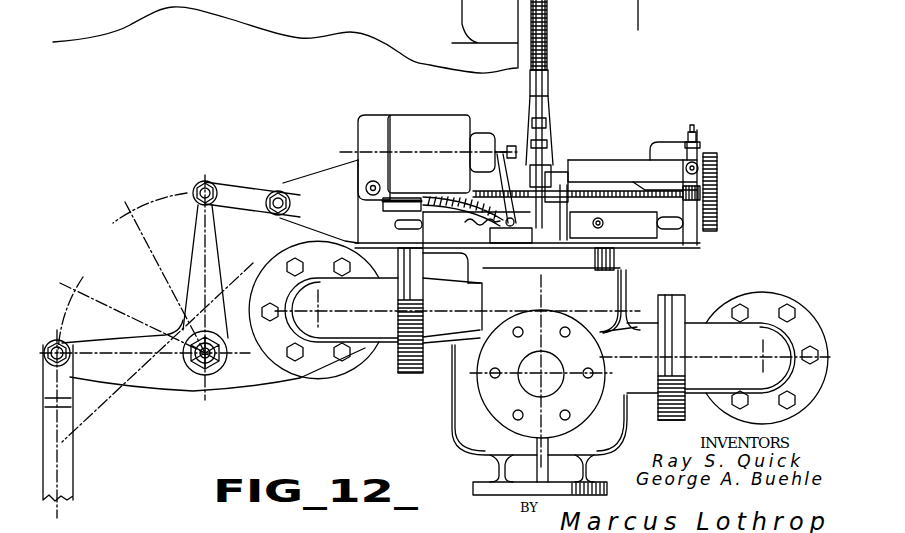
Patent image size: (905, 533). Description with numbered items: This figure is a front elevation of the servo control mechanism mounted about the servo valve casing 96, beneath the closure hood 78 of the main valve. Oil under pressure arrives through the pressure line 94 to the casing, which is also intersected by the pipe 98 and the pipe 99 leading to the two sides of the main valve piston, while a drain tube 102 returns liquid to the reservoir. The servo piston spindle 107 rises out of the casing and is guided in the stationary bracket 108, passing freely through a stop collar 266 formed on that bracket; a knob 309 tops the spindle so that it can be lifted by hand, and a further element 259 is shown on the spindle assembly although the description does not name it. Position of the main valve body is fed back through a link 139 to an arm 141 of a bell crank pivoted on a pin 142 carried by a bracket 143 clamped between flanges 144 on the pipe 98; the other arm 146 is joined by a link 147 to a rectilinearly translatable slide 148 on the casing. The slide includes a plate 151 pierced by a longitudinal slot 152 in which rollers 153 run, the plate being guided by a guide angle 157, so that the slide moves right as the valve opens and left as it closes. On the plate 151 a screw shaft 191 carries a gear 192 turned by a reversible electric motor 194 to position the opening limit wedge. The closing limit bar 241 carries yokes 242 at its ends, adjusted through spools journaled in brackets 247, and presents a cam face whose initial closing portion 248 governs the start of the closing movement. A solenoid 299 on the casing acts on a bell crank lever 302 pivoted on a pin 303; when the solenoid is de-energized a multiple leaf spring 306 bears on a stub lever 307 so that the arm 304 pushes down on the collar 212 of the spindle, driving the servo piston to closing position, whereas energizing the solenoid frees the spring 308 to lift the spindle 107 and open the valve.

The closure hood 78 is at (188, 0).
The pressure line 94 is at (523, 388).
The servo valve casing 96 is at (624, 290).
The pipe 98 is at (380, 346).
The pipe 99 is at (702, 327).
The drain tube 102 is at (487, 494).
The spindle 107 is at (549, 76).
The stationary bracket 108 is at (563, 114).
The link 139 is at (73, 481).
The arm 141 is at (104, 350).
The pin 142 is at (198, 388).
The bracket 143 is at (251, 378).
The flanges 144 is at (312, 372).
The arm 146 is at (192, 238).
The link 147 is at (236, 183).
The slide 148 is at (301, 173).
The plate 151 is at (346, 162).
The longitudinal slot 152 is at (395, 224).
The rollers 153 is at (604, 223).
The guide angle 157 is at (658, 235).
The screw shaft 191 is at (601, 188).
The gear 192 is at (718, 208).
The reversible electric motor 194 is at (666, 145).
The collar 212 is at (560, 240).
The bar 241 is at (588, 163).
The yokes 242 is at (708, 156).
The brackets 247 is at (696, 131).
The initial closing portion 248 is at (620, 182).
The nut 259 is at (549, 172).
The stop collar 266 is at (548, 120).
The solenoid 299 is at (407, 125).
The bell crank lever 302 is at (472, 191).
The pin 303 is at (508, 236).
The arm 304 is at (523, 230).
The multiple leaf spring 306 is at (416, 199).
The stub lever 307 is at (467, 225).
The spring 308 is at (548, 37).
The knob 309 is at (558, 35).